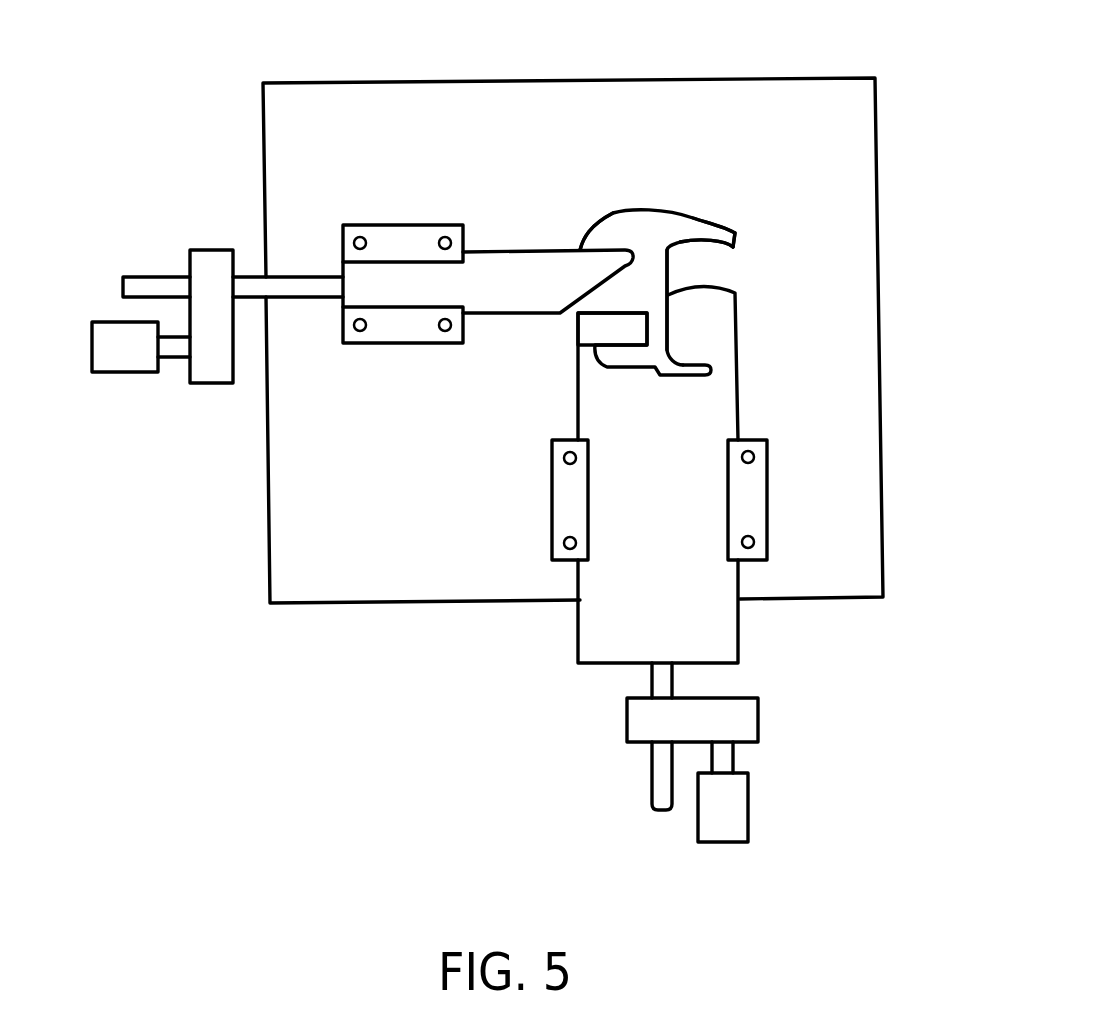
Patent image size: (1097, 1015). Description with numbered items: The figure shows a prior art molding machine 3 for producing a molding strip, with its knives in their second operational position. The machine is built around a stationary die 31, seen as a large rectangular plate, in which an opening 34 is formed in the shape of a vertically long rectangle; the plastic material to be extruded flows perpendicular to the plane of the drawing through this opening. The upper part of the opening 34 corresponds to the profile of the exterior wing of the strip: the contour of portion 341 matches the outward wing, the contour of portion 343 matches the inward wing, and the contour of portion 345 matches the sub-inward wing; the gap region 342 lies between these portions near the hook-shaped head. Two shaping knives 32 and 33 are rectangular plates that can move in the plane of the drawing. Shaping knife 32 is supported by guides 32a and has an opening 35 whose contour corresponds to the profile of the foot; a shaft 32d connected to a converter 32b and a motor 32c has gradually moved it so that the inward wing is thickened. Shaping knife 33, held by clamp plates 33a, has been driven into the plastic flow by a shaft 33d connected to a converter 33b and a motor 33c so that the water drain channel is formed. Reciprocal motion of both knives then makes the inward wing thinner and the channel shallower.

The molding machine 3 is at (738, 46).
The die 31 is at (855, 580).
The shaping knife 32 is at (727, 397).
The guide 32a is at (573, 492).
The converter 32b is at (750, 722).
The motor 32c is at (735, 812).
The shaft 32d is at (652, 775).
The shaping knife 33 is at (503, 250).
The clamp plates 33a is at (402, 250).
The converter 33b is at (212, 365).
The motor 33c is at (118, 358).
The shaft 33d is at (243, 282).
The opening 34 is at (667, 212).
The portion 341 is at (715, 230).
The hook recess 342 is at (683, 258).
The portion 343 is at (613, 222).
The portion 345 is at (647, 282).
The opening 35 is at (647, 330).